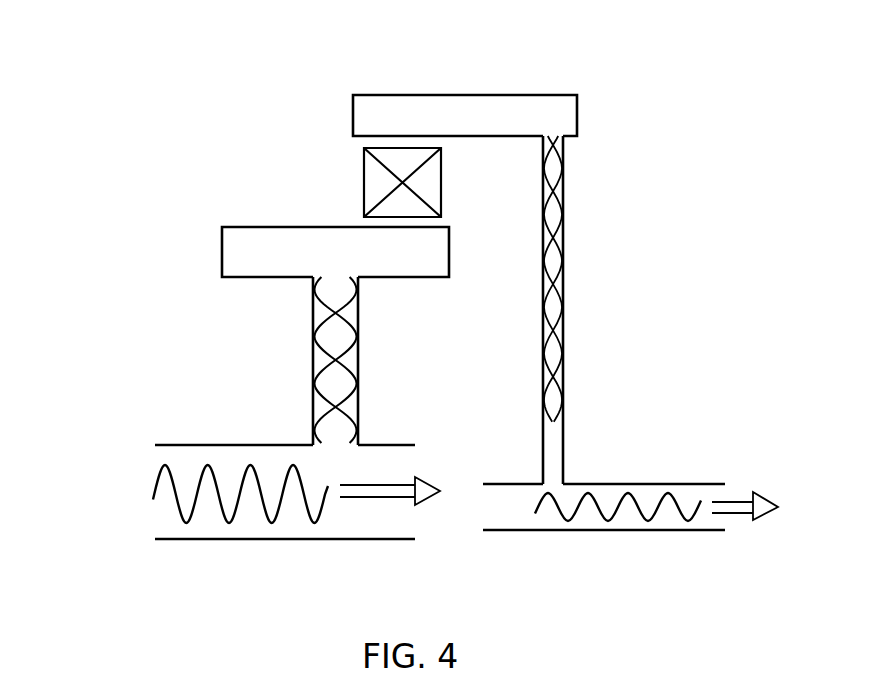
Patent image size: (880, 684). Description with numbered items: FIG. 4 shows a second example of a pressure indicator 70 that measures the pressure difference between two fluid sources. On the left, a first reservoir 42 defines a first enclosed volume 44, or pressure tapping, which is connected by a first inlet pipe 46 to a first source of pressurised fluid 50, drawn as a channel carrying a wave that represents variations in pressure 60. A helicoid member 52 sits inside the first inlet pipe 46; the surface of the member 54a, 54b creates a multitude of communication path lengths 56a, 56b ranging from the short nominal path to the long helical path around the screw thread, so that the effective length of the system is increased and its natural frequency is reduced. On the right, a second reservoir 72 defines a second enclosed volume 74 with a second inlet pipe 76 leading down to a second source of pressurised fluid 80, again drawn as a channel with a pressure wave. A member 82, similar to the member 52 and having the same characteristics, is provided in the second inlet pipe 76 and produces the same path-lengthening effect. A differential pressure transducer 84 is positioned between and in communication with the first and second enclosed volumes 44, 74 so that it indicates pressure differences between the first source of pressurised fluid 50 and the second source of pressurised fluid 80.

The pressure indicator 70 is at (93, 195).
The first reservoir 42 is at (321, 308).
The first enclosed volume 44 is at (268, 240).
The first inlet pipe 46 is at (313, 319).
The member 52 is at (334, 360).
The surface of the member 54a is at (260, 326).
The communication path lengths 56a is at (313, 370).
The surface of the member 54b is at (410, 401).
The communication path lengths 56b is at (328, 415).
The first source of pressurised fluid 50 is at (265, 519).
The variations in pressure 60 is at (172, 500).
The second reservoir 72 is at (470, 263).
The second enclosed volume 74 is at (486, 108).
The second inlet pipe 76 is at (565, 440).
The member 82 is at (562, 287).
The differential pressure transducer 84 is at (364, 170).
The second source of pressurised fluid 80 is at (527, 520).